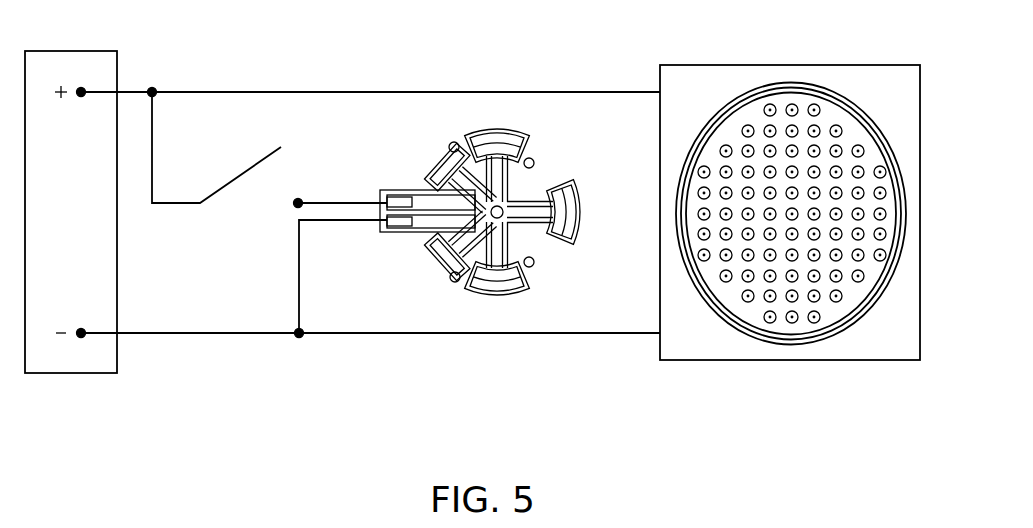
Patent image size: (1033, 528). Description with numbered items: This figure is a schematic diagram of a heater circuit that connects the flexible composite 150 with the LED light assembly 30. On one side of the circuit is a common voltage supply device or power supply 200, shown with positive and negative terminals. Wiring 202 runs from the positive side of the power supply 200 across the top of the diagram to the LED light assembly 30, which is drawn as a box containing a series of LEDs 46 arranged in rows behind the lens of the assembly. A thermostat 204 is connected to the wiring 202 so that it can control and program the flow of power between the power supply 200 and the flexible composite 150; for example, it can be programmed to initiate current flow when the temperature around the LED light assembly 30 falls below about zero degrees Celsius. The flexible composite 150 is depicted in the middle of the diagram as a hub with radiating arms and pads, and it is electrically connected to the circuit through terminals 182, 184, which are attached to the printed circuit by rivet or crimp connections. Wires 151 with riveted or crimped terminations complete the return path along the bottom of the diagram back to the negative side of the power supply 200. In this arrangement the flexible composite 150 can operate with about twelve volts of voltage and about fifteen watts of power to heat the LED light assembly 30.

The power supply 200 is at (70, 375).
The wiring 202 is at (409, 90).
The thermostat 204 is at (240, 173).
The wires 151 is at (337, 335).
The terminal 182 is at (415, 192).
The terminal 184 is at (418, 230).
The flexible composite 150 is at (487, 129).
The LED light assembly 30 is at (797, 100).
The LEDs 46 is at (818, 128).